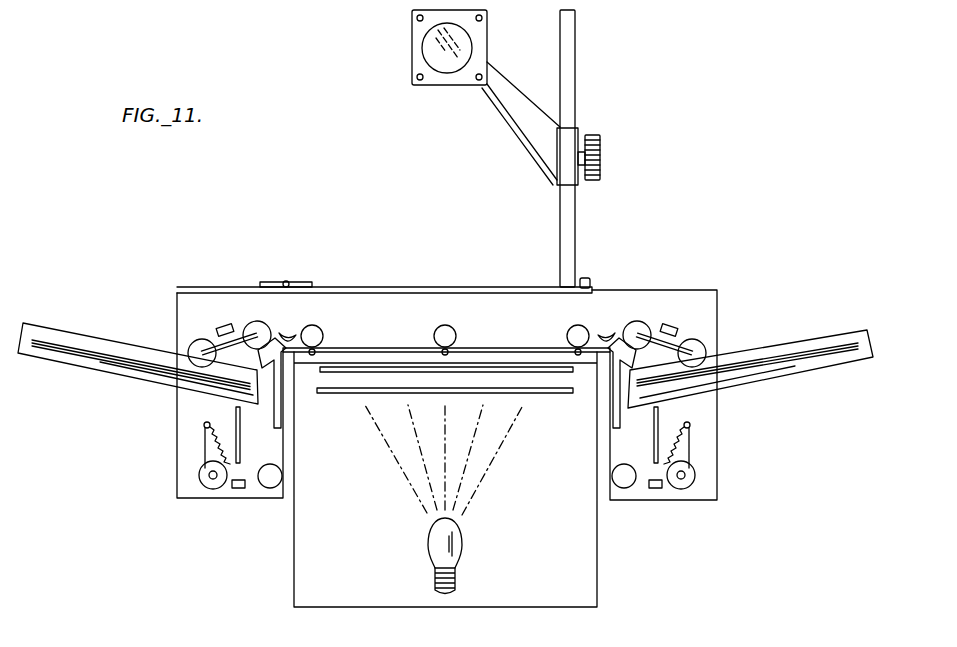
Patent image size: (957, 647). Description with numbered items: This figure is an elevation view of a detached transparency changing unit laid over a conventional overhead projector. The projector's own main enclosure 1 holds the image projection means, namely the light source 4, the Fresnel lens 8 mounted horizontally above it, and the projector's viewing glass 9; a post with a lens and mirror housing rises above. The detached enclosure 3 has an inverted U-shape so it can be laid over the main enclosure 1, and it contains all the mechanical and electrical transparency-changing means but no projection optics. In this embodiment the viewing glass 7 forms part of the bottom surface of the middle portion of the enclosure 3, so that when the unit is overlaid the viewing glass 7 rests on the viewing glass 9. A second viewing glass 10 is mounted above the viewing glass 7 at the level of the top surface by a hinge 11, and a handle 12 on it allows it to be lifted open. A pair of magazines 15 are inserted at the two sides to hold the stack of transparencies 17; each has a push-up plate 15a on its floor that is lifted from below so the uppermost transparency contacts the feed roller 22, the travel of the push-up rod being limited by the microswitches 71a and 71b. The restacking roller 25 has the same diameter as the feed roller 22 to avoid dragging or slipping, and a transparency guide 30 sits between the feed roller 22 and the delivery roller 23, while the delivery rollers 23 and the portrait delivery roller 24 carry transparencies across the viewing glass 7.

The enclosure for a conventional overhead projector 1 is at (305, 566).
The enclosure for a detached transparency changing system 3 is at (187, 434).
The light source 4 is at (438, 535).
The viewing glass 7 is at (347, 348).
The Fresnel lens 8 is at (322, 394).
The viewing glass 9 is at (397, 367).
The viewing glass 10 is at (545, 286).
The hinge 11 is at (286, 281).
The handle 12 is at (586, 278).
The magazine 15 is at (66, 323).
The push-up plate 15a is at (104, 370).
The stack of transparencies 17 is at (753, 362).
The feed roller 22 is at (252, 322).
The delivery roller 23 is at (318, 326).
The portrait delivery roller 24 is at (452, 326).
The restacking roller 25 is at (702, 345).
The guide 30 is at (610, 333).
The microswitch 71a is at (216, 328).
The microswitch 71b is at (238, 489).